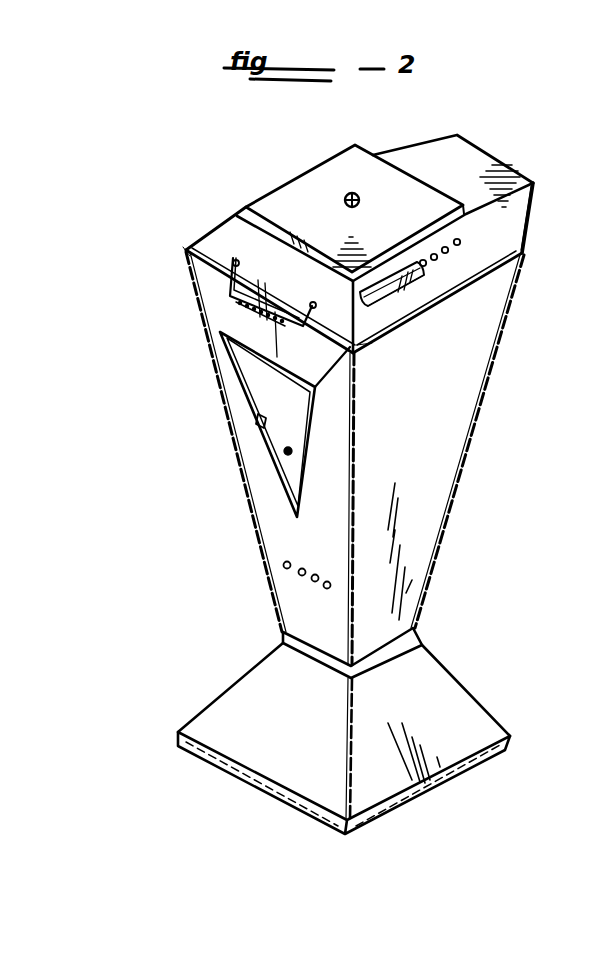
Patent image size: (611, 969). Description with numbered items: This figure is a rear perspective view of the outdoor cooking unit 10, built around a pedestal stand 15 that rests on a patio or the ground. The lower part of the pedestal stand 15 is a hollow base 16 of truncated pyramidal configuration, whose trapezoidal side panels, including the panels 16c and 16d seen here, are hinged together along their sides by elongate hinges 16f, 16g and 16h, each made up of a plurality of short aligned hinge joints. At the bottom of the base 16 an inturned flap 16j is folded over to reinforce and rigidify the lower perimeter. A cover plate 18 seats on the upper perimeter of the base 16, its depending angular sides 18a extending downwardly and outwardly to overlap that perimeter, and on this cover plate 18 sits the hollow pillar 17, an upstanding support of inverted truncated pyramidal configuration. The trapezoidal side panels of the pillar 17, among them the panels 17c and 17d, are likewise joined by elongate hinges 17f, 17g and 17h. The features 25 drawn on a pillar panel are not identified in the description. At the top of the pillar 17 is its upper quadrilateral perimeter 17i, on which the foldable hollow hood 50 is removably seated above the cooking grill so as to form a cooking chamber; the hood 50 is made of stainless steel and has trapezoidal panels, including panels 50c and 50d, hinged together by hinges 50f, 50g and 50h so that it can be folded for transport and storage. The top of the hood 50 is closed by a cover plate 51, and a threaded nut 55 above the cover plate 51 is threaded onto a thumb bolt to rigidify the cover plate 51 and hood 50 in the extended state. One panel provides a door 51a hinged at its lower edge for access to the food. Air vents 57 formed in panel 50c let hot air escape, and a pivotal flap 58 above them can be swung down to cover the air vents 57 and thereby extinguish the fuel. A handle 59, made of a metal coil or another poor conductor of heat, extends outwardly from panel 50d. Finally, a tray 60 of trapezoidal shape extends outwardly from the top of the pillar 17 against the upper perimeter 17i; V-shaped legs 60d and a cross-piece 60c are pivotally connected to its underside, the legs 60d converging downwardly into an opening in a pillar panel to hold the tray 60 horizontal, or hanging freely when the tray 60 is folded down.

The outdoor cooking unit 10 is at (533, 130).
The pedestal stand 15 is at (162, 462).
The hollow base 16 is at (218, 778).
The base panel 16c is at (398, 784).
The base panel 16d is at (267, 677).
The hinge 16f is at (465, 688).
The hinge 16g is at (347, 767).
The hinge 16h is at (230, 683).
The inturned flap 16j is at (302, 812).
The hollow pillar 17 is at (258, 552).
The pillar side panel 17c is at (443, 470).
The pillar side panel 17d is at (247, 442).
The hinge 17f is at (484, 390).
The hinge 17g is at (355, 458).
The hinge 17h is at (248, 498).
The upper quadrilateral perimeter 17i is at (495, 283).
The cover plate 18 is at (423, 628).
The depending angular sides 18a is at (395, 660).
The vent holes 25 is at (323, 586).
The foldable hollow hood 50 is at (262, 182).
The hood panel 50c is at (525, 241).
The hood panel 50d is at (183, 247).
The hinge 50f is at (500, 240).
The hinge 50g is at (372, 343).
The hinge 50h is at (213, 226).
The cover plate 51 is at (302, 170).
The door 51a is at (447, 234).
The threaded nut 55 is at (352, 193).
The air vents 57 is at (405, 258).
The pivotal flap 58 is at (418, 274).
The handle 59 is at (288, 330).
The tray 60 is at (438, 143).
The cross-piece 60c is at (255, 416).
The legs 60d is at (318, 427).